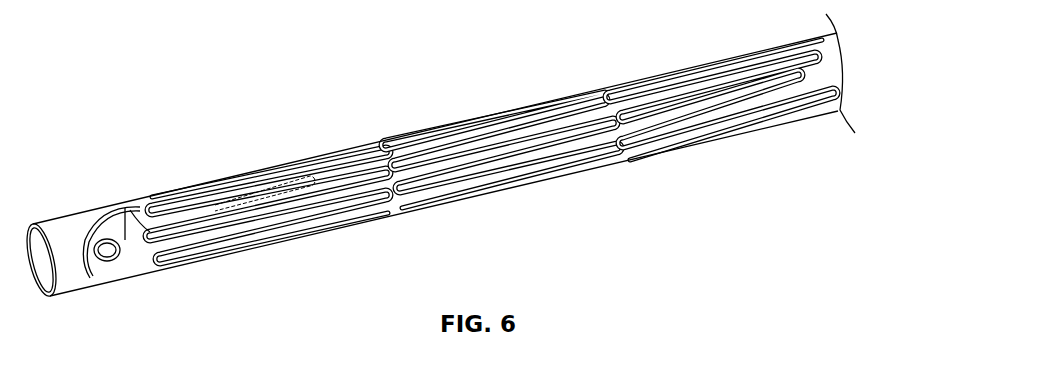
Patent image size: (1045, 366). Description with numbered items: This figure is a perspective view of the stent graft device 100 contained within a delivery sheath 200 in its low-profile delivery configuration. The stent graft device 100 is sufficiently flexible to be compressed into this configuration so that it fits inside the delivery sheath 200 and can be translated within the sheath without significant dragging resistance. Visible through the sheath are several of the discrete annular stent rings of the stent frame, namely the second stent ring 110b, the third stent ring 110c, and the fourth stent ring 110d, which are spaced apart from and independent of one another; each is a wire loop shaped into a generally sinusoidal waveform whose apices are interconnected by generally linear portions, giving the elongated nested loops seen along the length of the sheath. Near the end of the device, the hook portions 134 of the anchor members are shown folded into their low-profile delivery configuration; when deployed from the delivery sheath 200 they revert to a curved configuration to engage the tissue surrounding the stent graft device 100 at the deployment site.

The stent graft device 100 is at (697, 137).
The second stent ring 110b is at (173, 195).
The third stent ring 110c is at (512, 127).
The fourth stent ring 110d is at (770, 50).
The delivery sheath 200 is at (484, 132).
The hook portions 134 is at (98, 270).